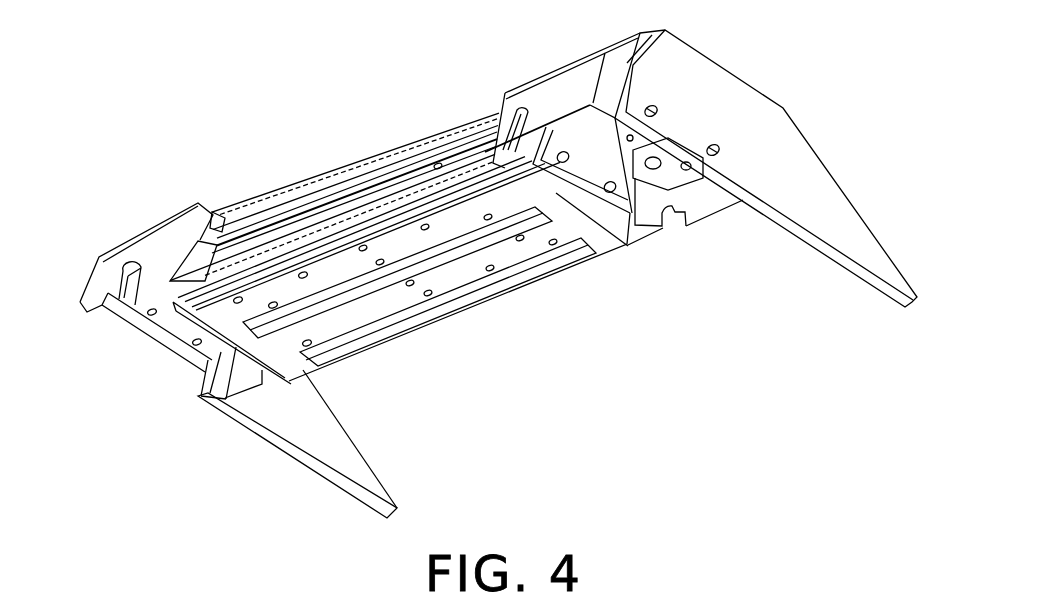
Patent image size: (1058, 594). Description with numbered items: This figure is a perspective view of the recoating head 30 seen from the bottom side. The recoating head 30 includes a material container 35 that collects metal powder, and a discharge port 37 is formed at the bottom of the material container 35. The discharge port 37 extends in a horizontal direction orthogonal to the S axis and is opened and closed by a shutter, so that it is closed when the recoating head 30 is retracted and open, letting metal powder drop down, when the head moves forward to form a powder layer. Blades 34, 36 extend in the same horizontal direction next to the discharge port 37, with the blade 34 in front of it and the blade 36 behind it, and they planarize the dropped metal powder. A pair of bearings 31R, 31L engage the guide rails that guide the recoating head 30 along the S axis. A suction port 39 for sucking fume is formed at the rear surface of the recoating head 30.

The recoating head 30 is at (293, 53).
The bearing 31L is at (532, 96).
The bearing 31R is at (123, 268).
The blade 34 is at (537, 270).
The material container 35 is at (573, 228).
The blade 36 is at (327, 247).
The discharge port 37 is at (428, 262).
The suction port 39 is at (253, 204).